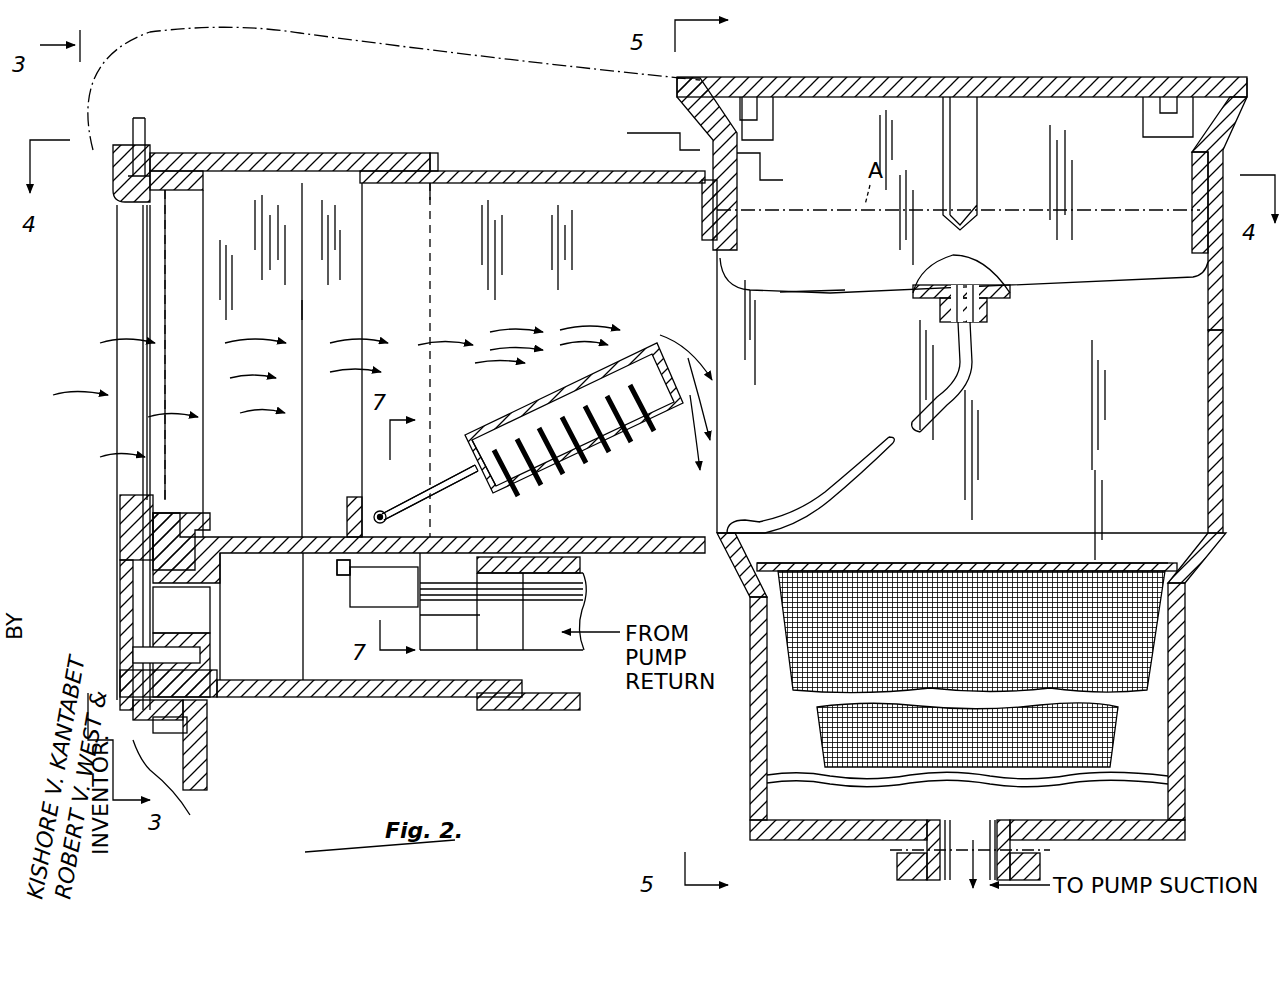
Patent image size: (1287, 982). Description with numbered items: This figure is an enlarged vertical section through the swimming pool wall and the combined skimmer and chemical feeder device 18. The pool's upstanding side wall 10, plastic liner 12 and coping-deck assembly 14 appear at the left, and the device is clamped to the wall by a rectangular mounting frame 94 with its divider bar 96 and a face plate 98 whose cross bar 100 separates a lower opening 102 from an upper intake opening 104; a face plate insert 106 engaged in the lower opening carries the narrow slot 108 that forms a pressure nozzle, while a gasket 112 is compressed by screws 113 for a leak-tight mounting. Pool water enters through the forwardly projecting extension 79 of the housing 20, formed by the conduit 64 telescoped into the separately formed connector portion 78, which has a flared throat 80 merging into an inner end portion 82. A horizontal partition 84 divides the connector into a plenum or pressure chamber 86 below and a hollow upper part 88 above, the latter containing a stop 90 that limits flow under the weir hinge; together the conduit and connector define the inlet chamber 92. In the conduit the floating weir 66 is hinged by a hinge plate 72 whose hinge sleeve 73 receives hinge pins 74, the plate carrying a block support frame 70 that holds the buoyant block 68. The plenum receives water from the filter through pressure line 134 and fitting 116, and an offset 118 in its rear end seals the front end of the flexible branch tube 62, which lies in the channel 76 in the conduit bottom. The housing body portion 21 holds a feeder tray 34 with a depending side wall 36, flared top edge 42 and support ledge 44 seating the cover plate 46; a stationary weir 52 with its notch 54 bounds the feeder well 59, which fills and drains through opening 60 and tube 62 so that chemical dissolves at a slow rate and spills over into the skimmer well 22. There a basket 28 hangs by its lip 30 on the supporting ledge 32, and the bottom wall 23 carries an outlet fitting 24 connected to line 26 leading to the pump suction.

The side wall 10 is at (185, 785).
The plastic liner 12 is at (177, 785).
The coping-deck assembly 14 is at (310, 52).
The device 18 is at (478, 158).
The housing 20 is at (596, 170).
The body portion 21 is at (1225, 365).
The main or skimmer well 22 is at (1185, 643).
The bottom wall 23 is at (897, 825).
The outlet fitting 24 is at (897, 872).
The line 26 is at (1042, 858).
The basket 28 is at (1105, 745).
The lip 30 is at (1046, 565).
The supporting ledge 32 is at (1177, 565).
The feeder tray or frame 34 is at (1232, 128).
The side wall 36 is at (712, 250).
The flared top edge portion 42 is at (1195, 160).
The support ledge 44 is at (1200, 97).
The cover plate 46 is at (915, 77).
The stationary weir 52 is at (1135, 278).
The notch 54 is at (978, 160).
The feeder well 59 is at (855, 300).
The opening 60 is at (960, 285).
The flexible branch tube 62 is at (975, 375).
The conduit 64 is at (545, 170).
The floating weir 66 is at (578, 455).
The buoyant block 68 is at (620, 415).
The block support frame 70 is at (508, 480).
The hinge plate 72 is at (470, 480).
The hinge sleeve 73 is at (383, 510).
The hinge pins 74 is at (410, 515).
The channel or trough 76 is at (650, 553).
The connector portion 78 is at (392, 150).
The extension 79 is at (438, 150).
The throat 80 is at (262, 183).
The inner end portion 82 is at (325, 183).
The partition 84 is at (272, 537).
The plenum or pressure chamber 86 is at (268, 629).
The hollow upper part 88 is at (265, 460).
The stop or abutment 90 is at (347, 510).
The inlet chamber 92 is at (408, 263).
The mounting frame 94 is at (195, 192).
The divider bar 96 is at (156, 445).
The face plate 98 is at (115, 180).
The cross bar 100 is at (118, 500).
The lower opening 102 is at (150, 545).
The intake opening 104 is at (125, 205).
The face plate insert 106 is at (181, 610).
The slot 108 is at (133, 620).
The gasket 112 is at (180, 740).
The screws 113 is at (125, 628).
The fitting 116 is at (382, 697).
The offset 118 is at (352, 605).
The pressure line 134 is at (548, 710).